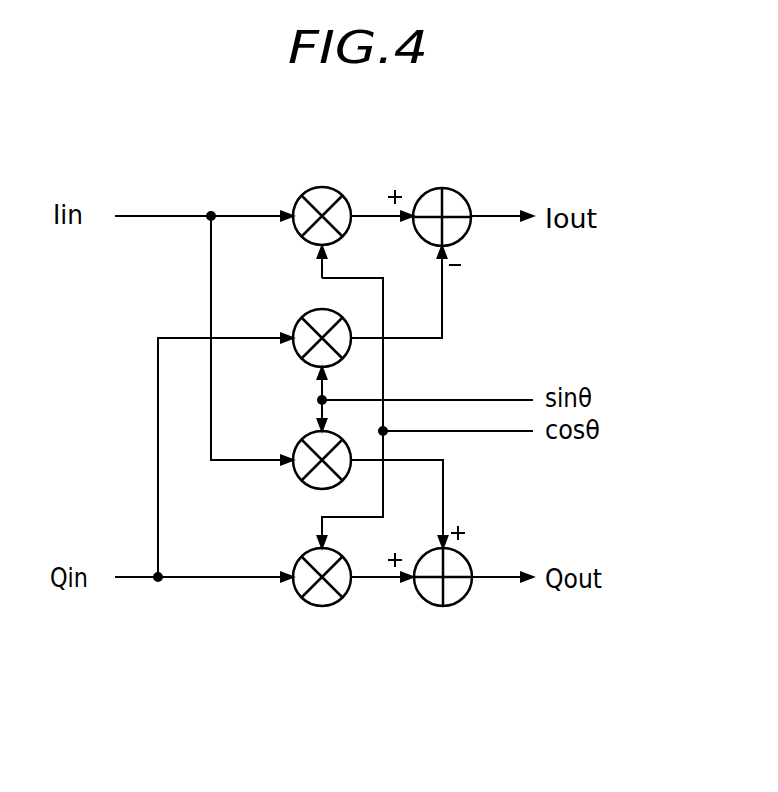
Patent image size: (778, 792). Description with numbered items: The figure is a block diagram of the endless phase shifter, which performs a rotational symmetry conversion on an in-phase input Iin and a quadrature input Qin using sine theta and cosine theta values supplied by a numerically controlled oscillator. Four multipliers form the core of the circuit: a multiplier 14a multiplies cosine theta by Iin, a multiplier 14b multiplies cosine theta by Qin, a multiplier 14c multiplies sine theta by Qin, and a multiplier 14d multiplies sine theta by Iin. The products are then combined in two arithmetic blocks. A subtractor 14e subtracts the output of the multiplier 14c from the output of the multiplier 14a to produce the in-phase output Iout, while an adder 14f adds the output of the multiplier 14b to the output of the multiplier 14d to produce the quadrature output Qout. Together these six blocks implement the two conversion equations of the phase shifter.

The multiplier 14a is at (310, 187).
The multiplier 14b is at (312, 605).
The multiplier 14c is at (300, 318).
The multiplier 14d is at (298, 480).
The subtractor 14e is at (461, 196).
The adder 14f is at (463, 600).